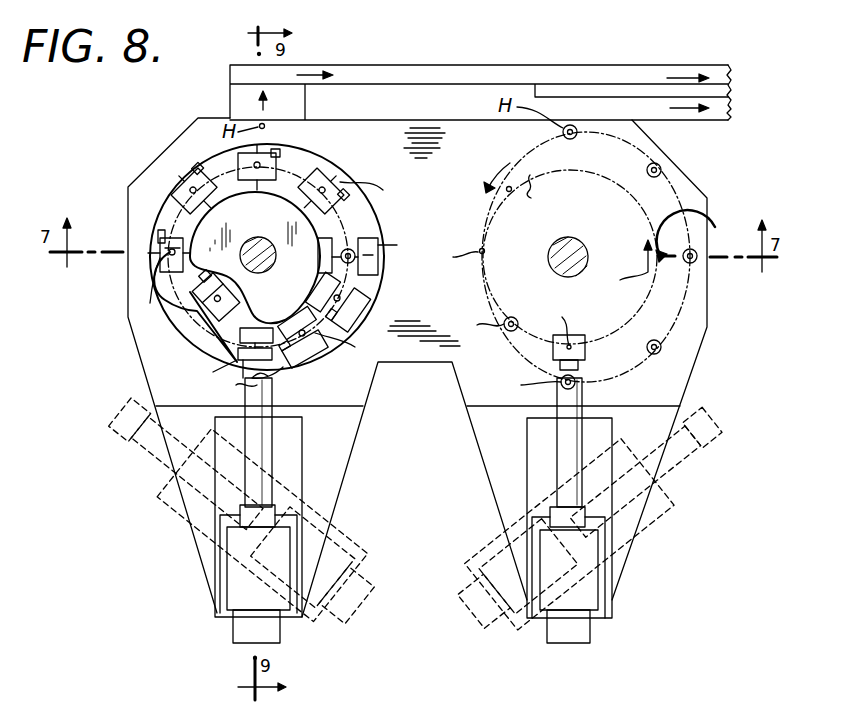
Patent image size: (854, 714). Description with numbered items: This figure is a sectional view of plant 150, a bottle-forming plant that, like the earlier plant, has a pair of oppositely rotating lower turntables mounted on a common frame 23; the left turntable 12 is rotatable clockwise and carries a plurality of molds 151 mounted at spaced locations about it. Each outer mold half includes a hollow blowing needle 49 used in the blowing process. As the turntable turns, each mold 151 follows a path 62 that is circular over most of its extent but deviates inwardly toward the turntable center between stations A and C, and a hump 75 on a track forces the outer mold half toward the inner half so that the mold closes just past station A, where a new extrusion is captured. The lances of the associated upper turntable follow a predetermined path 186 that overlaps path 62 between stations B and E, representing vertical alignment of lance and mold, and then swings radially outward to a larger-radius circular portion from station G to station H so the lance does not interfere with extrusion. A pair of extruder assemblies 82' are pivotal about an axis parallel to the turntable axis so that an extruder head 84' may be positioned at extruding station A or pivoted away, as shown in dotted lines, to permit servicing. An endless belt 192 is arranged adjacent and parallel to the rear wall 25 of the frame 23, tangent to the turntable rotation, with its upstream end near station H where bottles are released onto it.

The plant 150 is at (372, 58).
The endless belt 192 is at (486, 73).
The rear wall 25 is at (427, 118).
The frame 23 is at (173, 165).
The turntable 12 is at (377, 287).
The mold 151 is at (327, 177).
The path 62 is at (363, 220).
The blowing needle 49 is at (197, 311).
The hump 75 is at (271, 378).
The path 186 is at (478, 236).
The extruder head 84' is at (357, 400).
The extruder assembly 82' is at (435, 512).